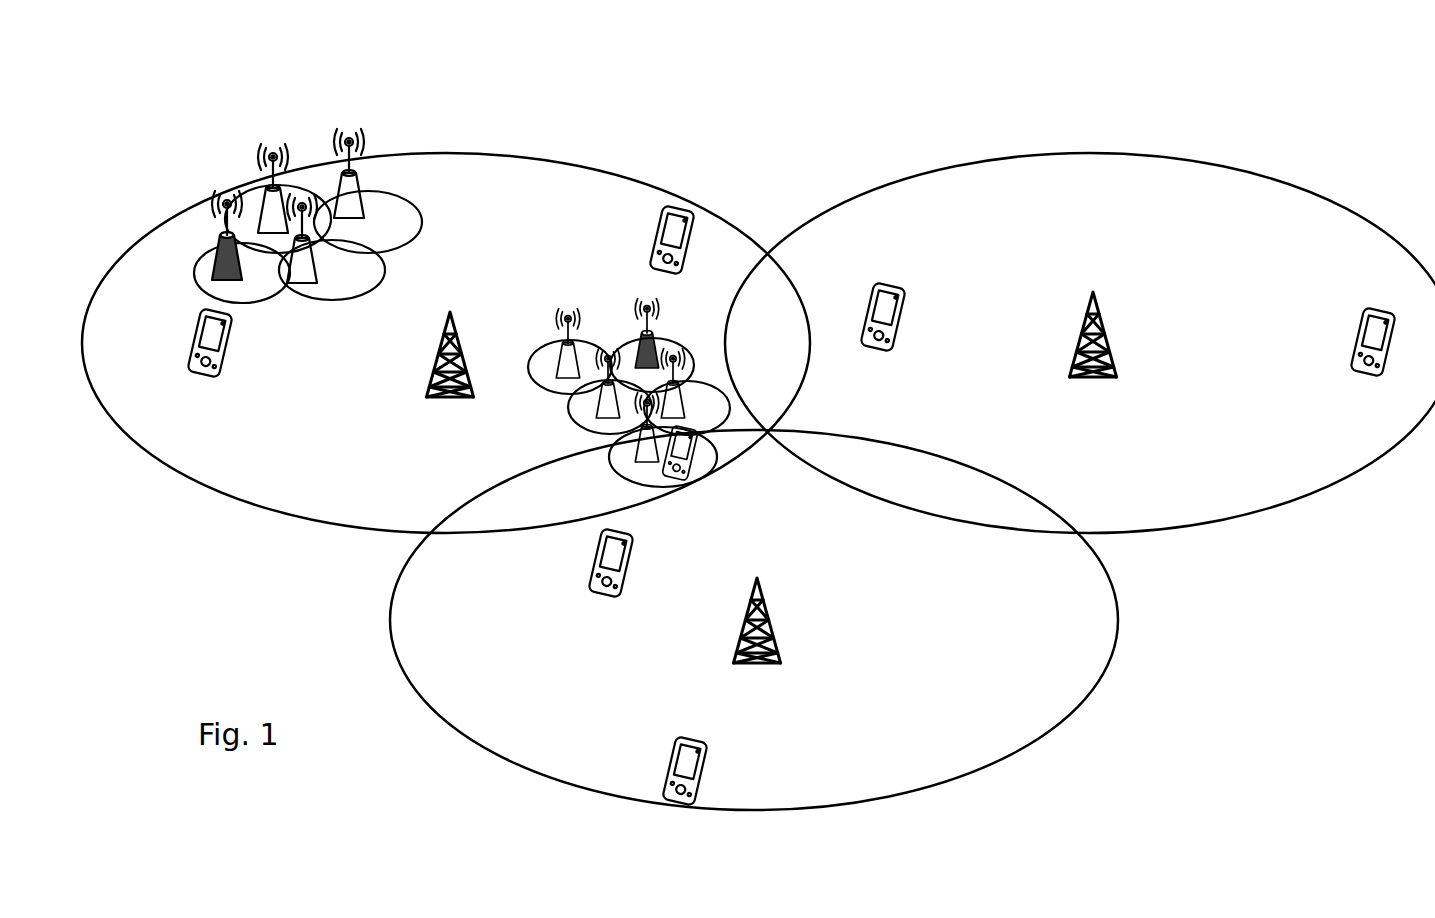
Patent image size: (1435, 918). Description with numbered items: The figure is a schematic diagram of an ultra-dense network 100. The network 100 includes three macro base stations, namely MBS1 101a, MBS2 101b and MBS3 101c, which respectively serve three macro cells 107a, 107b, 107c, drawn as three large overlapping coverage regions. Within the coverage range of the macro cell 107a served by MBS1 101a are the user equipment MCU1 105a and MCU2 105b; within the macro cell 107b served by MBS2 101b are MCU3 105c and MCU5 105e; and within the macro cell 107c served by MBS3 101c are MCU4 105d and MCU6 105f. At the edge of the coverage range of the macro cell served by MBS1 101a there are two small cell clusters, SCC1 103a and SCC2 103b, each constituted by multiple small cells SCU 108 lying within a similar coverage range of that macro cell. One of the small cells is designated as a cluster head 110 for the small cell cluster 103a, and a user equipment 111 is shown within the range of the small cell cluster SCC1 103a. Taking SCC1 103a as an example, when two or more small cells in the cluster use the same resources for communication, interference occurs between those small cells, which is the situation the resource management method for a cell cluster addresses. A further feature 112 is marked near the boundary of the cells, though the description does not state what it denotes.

The ultra-dense network 100 is at (840, 61).
The MBS1 101a is at (427, 391).
The MBS2 101b is at (1115, 364).
The MBS3 101c is at (780, 651).
The SCC1 103a is at (529, 372).
The SCC2 103b is at (420, 214).
The MCU1 105a is at (658, 224).
The MCU2 105b is at (193, 364).
The MCU3 105c is at (868, 310).
The MCU4 105d is at (597, 548).
The MCU5 105e is at (1358, 316).
The MCU6 105f is at (705, 788).
The macro cell 107a is at (552, 162).
The macro cell 107b is at (1275, 180).
The macro cell 107c is at (600, 792).
The small cell SCU 108 is at (320, 268).
The cluster head 110 is at (212, 283).
The user equipment 111 is at (687, 470).
The cell boundary region 112 is at (393, 552).